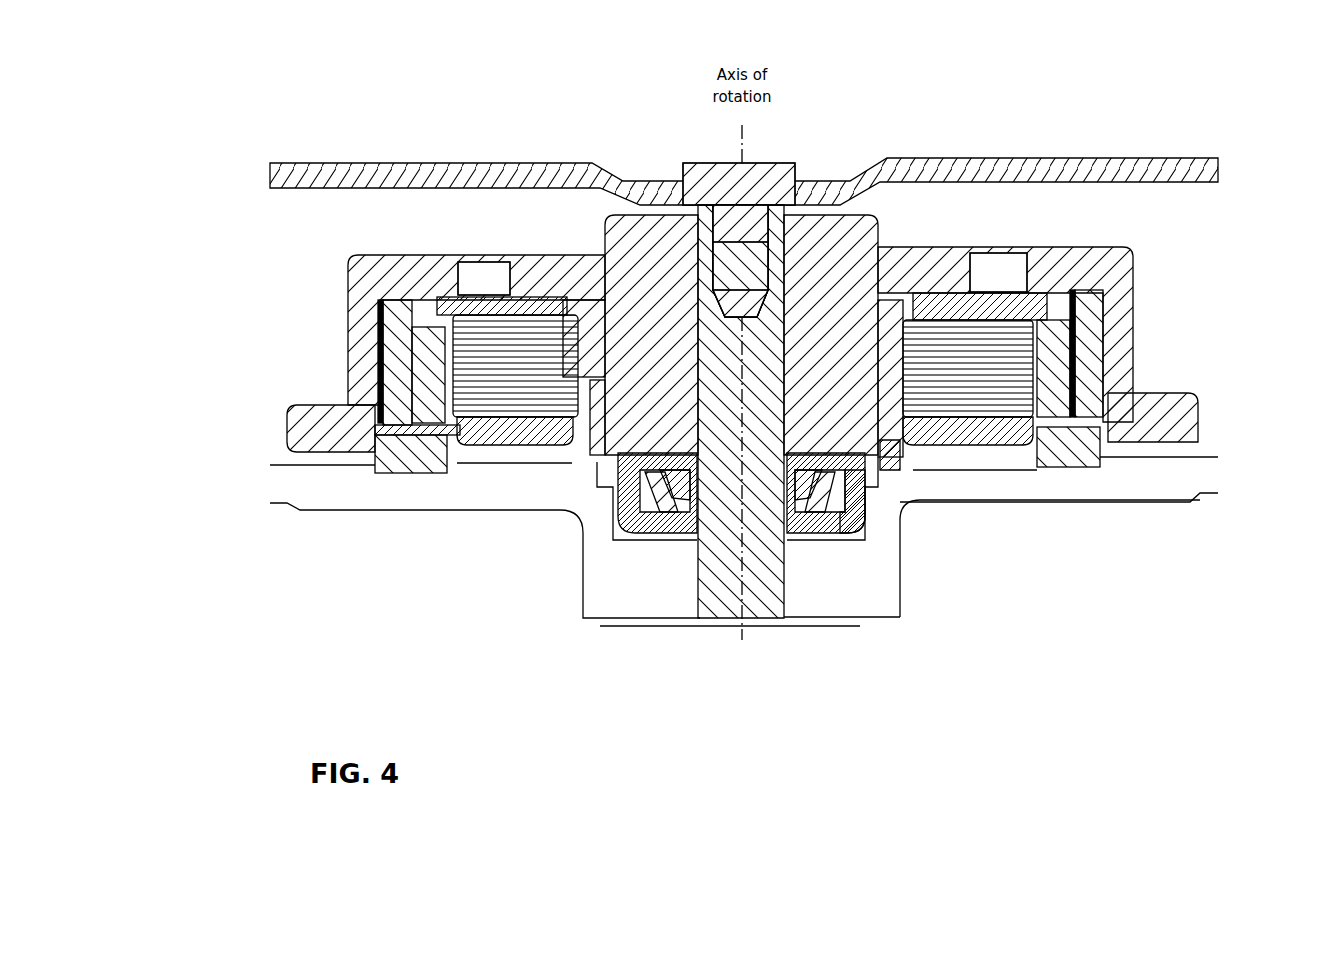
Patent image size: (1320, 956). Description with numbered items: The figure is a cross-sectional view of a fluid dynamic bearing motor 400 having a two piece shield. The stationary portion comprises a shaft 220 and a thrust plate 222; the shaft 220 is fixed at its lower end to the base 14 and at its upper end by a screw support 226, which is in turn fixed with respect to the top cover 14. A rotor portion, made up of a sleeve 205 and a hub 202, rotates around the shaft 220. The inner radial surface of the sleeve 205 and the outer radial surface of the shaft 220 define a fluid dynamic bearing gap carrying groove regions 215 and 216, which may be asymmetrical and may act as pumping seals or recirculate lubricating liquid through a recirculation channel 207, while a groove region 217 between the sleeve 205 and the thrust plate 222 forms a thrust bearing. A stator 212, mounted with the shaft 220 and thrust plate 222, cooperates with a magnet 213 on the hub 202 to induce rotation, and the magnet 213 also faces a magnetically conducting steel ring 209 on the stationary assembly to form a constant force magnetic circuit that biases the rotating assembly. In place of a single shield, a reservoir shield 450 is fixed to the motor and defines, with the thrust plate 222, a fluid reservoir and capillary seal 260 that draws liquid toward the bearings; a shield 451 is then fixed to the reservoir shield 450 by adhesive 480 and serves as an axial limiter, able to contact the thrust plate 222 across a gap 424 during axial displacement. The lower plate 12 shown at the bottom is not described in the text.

The motor 400 is at (243, 298).
The base 14 is at (945, 168).
The screw support 226 is at (773, 162).
The groove region 215 is at (688, 298).
The hub 202 is at (915, 298).
The magnet 213 is at (1110, 395).
The sleeve 205 is at (880, 440).
The recirculation channel 207 is at (862, 465).
The stator 212 is at (980, 425).
The steel ring 209 is at (1050, 447).
The adhesive 480 is at (866, 508).
The capillary seal 260 is at (857, 533).
The reservoir shield 450 is at (845, 527).
The shield 451 is at (815, 525).
The shaft 220 is at (720, 597).
The gap 424 is at (683, 540).
The thrust plate 222 is at (648, 540).
The groove region 217 is at (600, 533).
The groove region 216 is at (612, 460).
The lower plate 12 is at (382, 490).